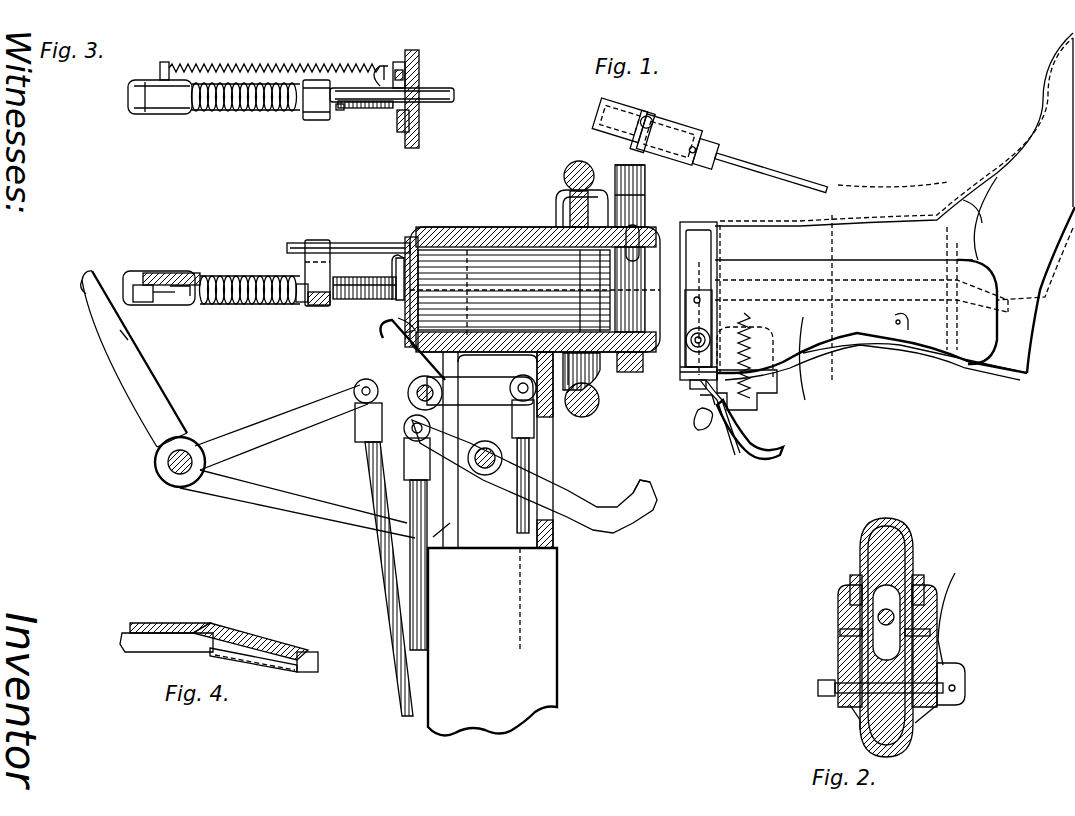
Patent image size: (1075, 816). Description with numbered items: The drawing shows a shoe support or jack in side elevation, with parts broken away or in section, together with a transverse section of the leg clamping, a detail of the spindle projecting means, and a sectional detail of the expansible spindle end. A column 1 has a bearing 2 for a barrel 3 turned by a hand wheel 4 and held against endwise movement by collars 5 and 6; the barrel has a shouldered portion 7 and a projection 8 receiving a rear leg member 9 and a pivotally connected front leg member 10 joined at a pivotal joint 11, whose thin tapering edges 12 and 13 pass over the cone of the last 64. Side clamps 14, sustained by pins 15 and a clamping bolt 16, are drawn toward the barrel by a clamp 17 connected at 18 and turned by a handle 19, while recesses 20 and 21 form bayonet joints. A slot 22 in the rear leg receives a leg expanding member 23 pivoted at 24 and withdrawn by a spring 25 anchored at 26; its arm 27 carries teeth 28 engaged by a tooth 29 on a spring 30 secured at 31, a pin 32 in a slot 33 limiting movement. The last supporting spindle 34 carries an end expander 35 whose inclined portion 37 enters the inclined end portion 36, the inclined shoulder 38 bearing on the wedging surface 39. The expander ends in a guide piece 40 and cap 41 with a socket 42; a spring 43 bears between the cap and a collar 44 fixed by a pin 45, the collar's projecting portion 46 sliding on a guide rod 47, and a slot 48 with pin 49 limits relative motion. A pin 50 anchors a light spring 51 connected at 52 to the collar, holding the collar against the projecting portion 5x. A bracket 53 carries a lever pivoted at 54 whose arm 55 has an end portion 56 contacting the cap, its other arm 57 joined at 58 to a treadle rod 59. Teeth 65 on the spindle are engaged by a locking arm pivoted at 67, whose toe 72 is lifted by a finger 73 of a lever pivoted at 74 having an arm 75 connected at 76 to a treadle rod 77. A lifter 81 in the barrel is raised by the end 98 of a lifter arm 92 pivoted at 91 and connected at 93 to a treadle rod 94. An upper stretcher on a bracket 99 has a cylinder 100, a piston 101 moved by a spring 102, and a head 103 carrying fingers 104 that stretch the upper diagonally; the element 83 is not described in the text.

In FIG. 1, the column 1 is at (552, 645).
In FIG. 1, the bearing 2 is at (483, 232).
In FIG. 1, the barrel 3 is at (520, 280).
In FIG. 1, the hand wheel 4 is at (563, 178).
In FIG. 3, the collar 5 is at (420, 72).
In FIG. 1, the collar 5 is at (414, 232).
In FIG. 3, the projecting portion of the barrel 5x is at (378, 66).
In FIG. 1, the projecting portion of the barrel 5x is at (397, 255).
In FIG. 1, the collar 6 is at (575, 212).
In FIG. 1, the shouldered portion 7 is at (668, 232).
In FIG. 1, the projection 8 is at (710, 232).
In FIG. 1, the rear leg member 9 is at (808, 392).
In FIG. 2, the rear leg member 9 is at (905, 742).
In FIG. 1, the front leg member 10 is at (815, 235).
In FIG. 2, the front leg member 10 is at (890, 520).
In FIG. 1, the pivotal joint 11 is at (722, 235).
In FIG. 2, the pivotal joint 11 is at (850, 588).
In FIG. 1, the edge of leg member 12 is at (985, 190).
In FIG. 1, the edge of leg member 13 is at (990, 325).
In FIG. 1, the side clamps 14 is at (690, 372).
In FIG. 2, the side clamps 14 is at (838, 610).
In FIG. 1, the pins 15 is at (702, 300).
In FIG. 2, the pins 15 is at (840, 633).
In FIG. 1, the clamping bolt 16 is at (706, 343).
In FIG. 2, the clamping bolt 16 is at (870, 690).
In FIG. 2, the clamp 17 is at (952, 705).
In FIG. 2, the connection of clamp to bolt 18 is at (957, 688).
In FIG. 2, the handle 19 is at (957, 592).
In FIG. 1, the recess 20 is at (688, 300).
In FIG. 1, the recess 21 is at (690, 355).
In FIG. 1, the slot 22 is at (845, 355).
In FIG. 1, the leg expanding member 23 is at (815, 360).
In FIG. 1, the pivot 24 is at (898, 330).
In FIG. 1, the spring 25 is at (760, 390).
In FIG. 1, the end of spring 26 is at (748, 340).
In FIG. 1, the arm 27 is at (750, 428).
In FIG. 1, the teeth 28 is at (750, 456).
In FIG. 1, the tooth 29 is at (738, 430).
In FIG. 1, the spring 30 is at (733, 458).
In FIG. 1, the securing point of spring 31 is at (695, 385).
In FIG. 1, the pin 32 is at (697, 428).
In FIG. 1, the slot 33 is at (707, 408).
In FIG. 3, the last supporting spindle 34 is at (450, 92).
In FIG. 1, the last supporting spindle 34 is at (198, 277).
In FIG. 2, the last supporting spindle 34 is at (886, 622).
In FIG. 4, the last supporting spindle 34 is at (170, 614).
In FIG. 2, the end expander 35 is at (886, 626).
In FIG. 4, the end expander 35 is at (165, 652).
In FIG. 1, the inclined end portion 36 is at (980, 280).
In FIG. 4, the inclined end portion 36 is at (243, 632).
In FIG. 4, the inclined portion of expander 37 is at (285, 672).
In FIG. 4, the inclined shoulder 38 is at (312, 652).
In FIG. 4, the inclined wedging surface 39 is at (285, 650).
In FIG. 1, the guide piece 40 is at (143, 302).
In FIG. 3, the cap 41 is at (170, 114).
In FIG. 1, the cap 41 is at (133, 275).
In FIG. 1, the socket 42 is at (148, 275).
In FIG. 3, the spring 43 is at (245, 112).
In FIG. 1, the spring 43 is at (260, 276).
In FIG. 1, the collar 44 is at (318, 305).
In FIG. 1, the pin 45 is at (300, 300).
In FIG. 3, the projecting portion of collar 46 is at (313, 120).
In FIG. 1, the projecting portion of collar 46 is at (312, 242).
In FIG. 3, the guide rod 47 is at (340, 110).
In FIG. 1, the guide rod 47 is at (342, 250).
In FIG. 1, the slot 48 is at (165, 302).
In FIG. 1, the pin 49 is at (183, 300).
In FIG. 3, the pin 50 is at (169, 64).
In FIG. 3, the light spring 51 is at (228, 64).
In FIG. 3, the connection of light spring 52 is at (400, 62).
In FIG. 1, the bracket 53 is at (280, 510).
In FIG. 1, the pivot 54 is at (168, 464).
In FIG. 1, the arm 55 is at (137, 405).
In FIG. 1, the end portion 56 is at (82, 292).
In FIG. 1, the arm 57 is at (295, 415).
In FIG. 1, the connection 58 is at (358, 385).
In FIG. 1, the treadle rod 59 is at (373, 478).
In FIG. 1, the last 64 is at (918, 205).
In FIG. 3, the teeth 65 is at (370, 108).
In FIG. 1, the teeth 65 is at (372, 285).
In FIG. 3, the pivot 67 is at (402, 132).
In FIG. 1, the pivot 67 is at (640, 247).
In FIG. 1, the toe 72 is at (398, 325).
In FIG. 1, the finger 73 is at (380, 345).
In FIG. 1, the pivot 74 is at (420, 398).
In FIG. 1, the arm 75 is at (478, 390).
In FIG. 1, the connection 76 is at (515, 397).
In FIG. 1, the treadle rod 77 is at (555, 540).
In FIG. 1, the lifter 81 is at (645, 181).
In FIG. 1, the pivot boss 83 is at (600, 378).
In FIG. 1, the pivot 91 is at (505, 455).
In FIG. 1, the lifter arm 92 is at (565, 508).
In FIG. 1, the connection 93 is at (410, 440).
In FIG. 1, the treadle rod 94 is at (412, 543).
In FIG. 1, the end of lifter arm 98 is at (645, 492).
In FIG. 1, the bracket 99 is at (600, 186).
In FIG. 1, the cylinder 100 is at (670, 138).
In FIG. 1, the piston 101 is at (602, 117).
In FIG. 1, the spring 102 is at (700, 147).
In FIG. 1, the head 103 is at (730, 152).
In FIG. 1, the fingers 104 is at (790, 178).